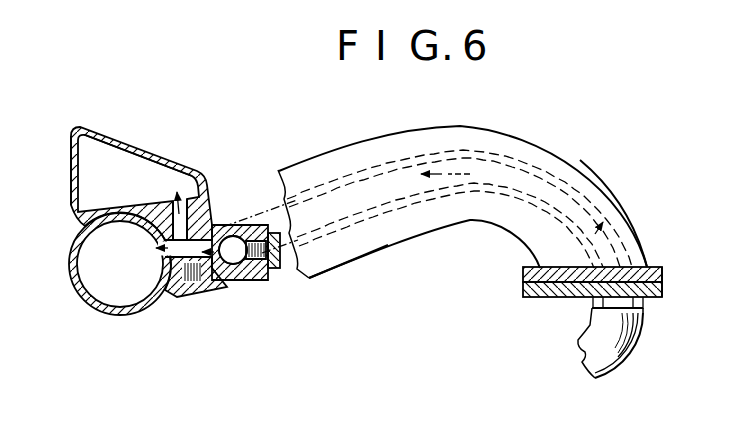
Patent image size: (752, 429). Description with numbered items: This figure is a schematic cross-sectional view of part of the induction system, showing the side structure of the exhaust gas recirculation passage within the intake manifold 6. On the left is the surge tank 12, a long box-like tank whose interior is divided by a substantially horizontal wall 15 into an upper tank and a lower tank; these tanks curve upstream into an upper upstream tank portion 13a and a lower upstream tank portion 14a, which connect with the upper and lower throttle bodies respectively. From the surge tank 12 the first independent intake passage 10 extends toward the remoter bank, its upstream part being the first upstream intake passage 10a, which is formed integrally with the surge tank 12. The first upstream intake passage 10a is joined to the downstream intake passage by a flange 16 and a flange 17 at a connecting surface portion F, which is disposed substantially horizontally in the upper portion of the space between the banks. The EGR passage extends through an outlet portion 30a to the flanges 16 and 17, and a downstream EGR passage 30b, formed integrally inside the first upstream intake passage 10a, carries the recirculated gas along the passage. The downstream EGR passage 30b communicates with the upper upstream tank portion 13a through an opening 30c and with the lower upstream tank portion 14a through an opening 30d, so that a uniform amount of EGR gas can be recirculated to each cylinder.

The intake manifold 6 is at (650, 226).
The first independent intake passage 10 is at (433, 122).
The first upstream intake passage 10a is at (346, 254).
The surge tank 12 is at (121, 125).
The upper upstream tank portion 13a is at (148, 170).
The lower upstream tank portion 14a is at (108, 290).
The wall 15 is at (72, 203).
The flange 16 is at (523, 272).
The flange 17 is at (533, 298).
The outlet portion 30a is at (626, 360).
The downstream EGR passage 30b is at (237, 281).
The opening 30c is at (206, 208).
The opening 30d is at (160, 290).
The connecting surface portion F is at (663, 282).